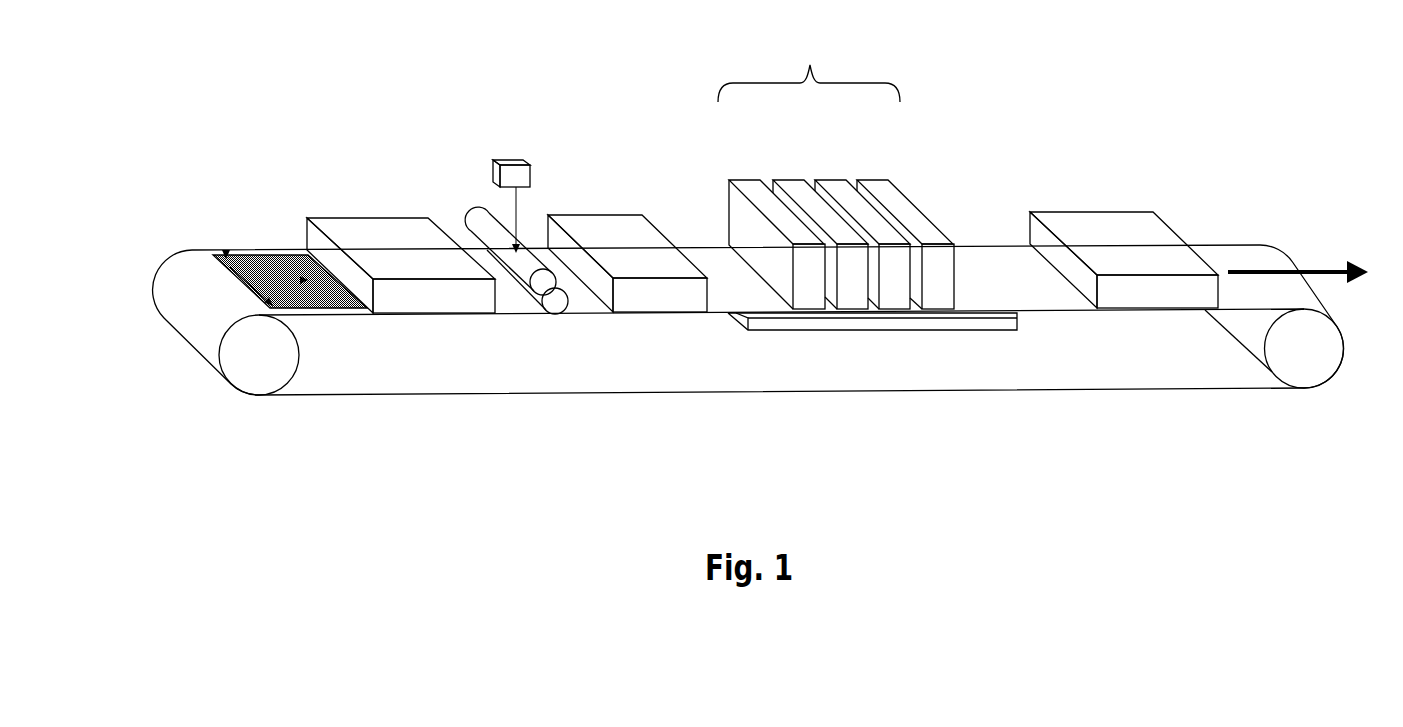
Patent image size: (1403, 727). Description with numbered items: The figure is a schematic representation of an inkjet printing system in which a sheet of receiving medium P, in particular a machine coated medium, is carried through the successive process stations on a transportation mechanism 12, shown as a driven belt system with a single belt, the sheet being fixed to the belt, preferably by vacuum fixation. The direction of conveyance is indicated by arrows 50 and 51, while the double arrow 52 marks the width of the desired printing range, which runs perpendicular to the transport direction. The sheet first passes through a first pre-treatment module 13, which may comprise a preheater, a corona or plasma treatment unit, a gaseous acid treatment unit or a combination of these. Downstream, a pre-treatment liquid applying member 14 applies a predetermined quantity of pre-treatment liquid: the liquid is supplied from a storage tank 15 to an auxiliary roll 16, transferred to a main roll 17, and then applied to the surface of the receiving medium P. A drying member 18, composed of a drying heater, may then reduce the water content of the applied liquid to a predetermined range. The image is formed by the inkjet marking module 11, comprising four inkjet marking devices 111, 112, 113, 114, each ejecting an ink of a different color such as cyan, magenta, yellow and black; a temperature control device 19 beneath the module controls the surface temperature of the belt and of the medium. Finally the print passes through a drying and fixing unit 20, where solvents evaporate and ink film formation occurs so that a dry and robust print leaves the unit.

The inkjet marking module 11 is at (827, 50).
The inkjet marking device 111 is at (880, 185).
The inkjet marking device 112 is at (833, 185).
The inkjet marking device 113 is at (793, 185).
The inkjet marking device 114 is at (750, 185).
The transportation mechanism 12 is at (281, 370).
The first pre-treatment module 13 is at (376, 222).
The pre-treatment liquid applying member 14 is at (520, 75).
The storage tank 15 is at (510, 158).
The auxiliary roll 16 is at (472, 230).
The main roll 17 is at (557, 312).
The drying member 18 is at (618, 215).
The temperature control device 19 is at (893, 327).
The drying and fixing unit 20 is at (1100, 215).
The arrow 50 is at (300, 280).
The arrow 51 is at (1265, 256).
The double arrow 52 is at (212, 307).
The receiving medium P is at (226, 250).